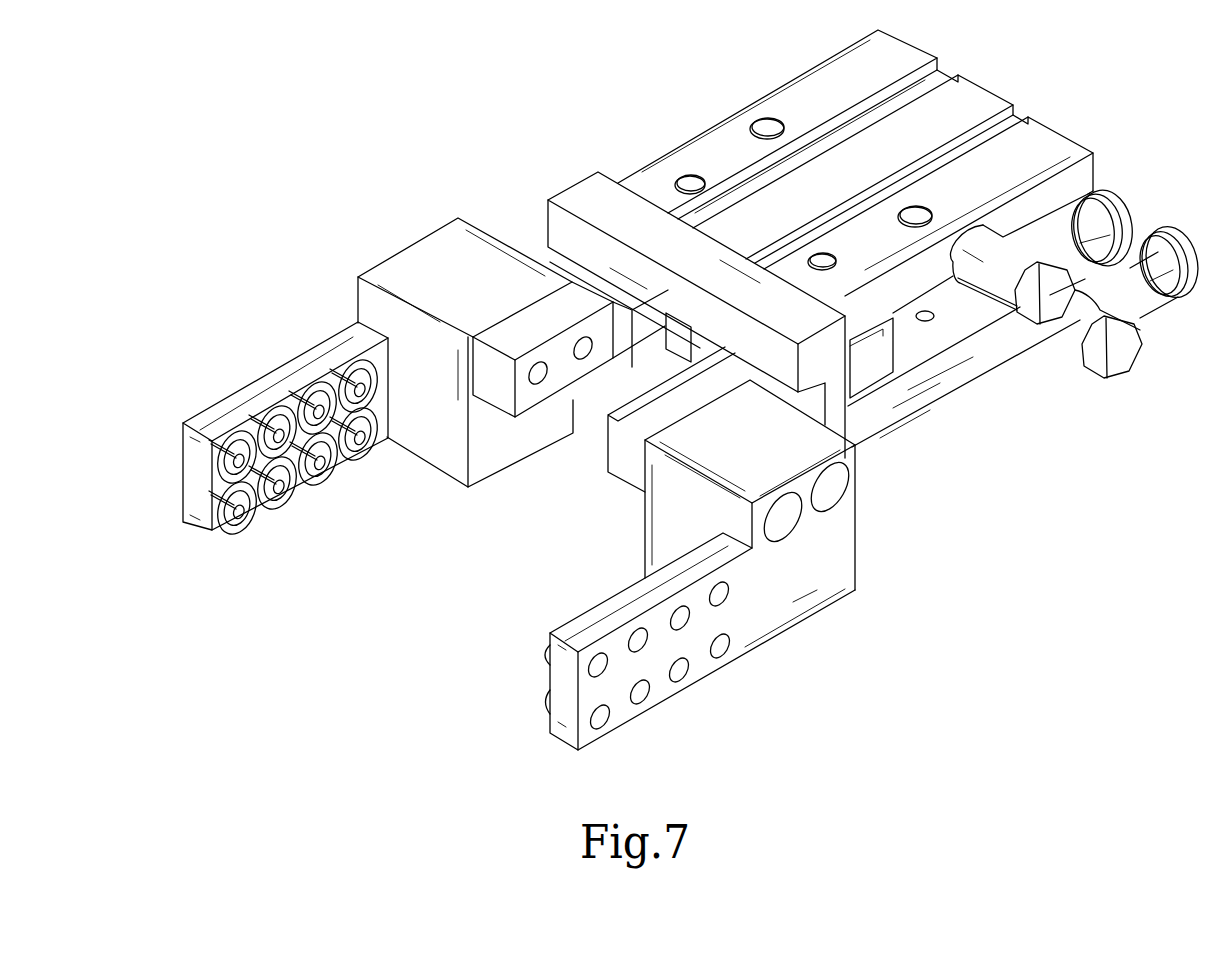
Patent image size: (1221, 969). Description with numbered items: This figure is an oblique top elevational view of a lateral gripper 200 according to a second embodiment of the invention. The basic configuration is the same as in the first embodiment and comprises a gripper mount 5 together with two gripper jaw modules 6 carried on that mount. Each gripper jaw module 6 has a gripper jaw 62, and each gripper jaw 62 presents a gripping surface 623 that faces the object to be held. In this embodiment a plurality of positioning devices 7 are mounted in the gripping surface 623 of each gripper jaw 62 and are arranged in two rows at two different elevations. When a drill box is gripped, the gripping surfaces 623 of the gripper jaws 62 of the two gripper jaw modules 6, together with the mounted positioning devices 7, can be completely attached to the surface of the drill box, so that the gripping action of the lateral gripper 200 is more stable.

The gripper mount 5 is at (1070, 126).
The lateral gripper 200 is at (570, 158).
The gripper jaw module 6 is at (397, 240).
The gripper jaw 62 is at (272, 381).
The gripping surface 623 is at (247, 425).
The positioning device 7 is at (212, 468).